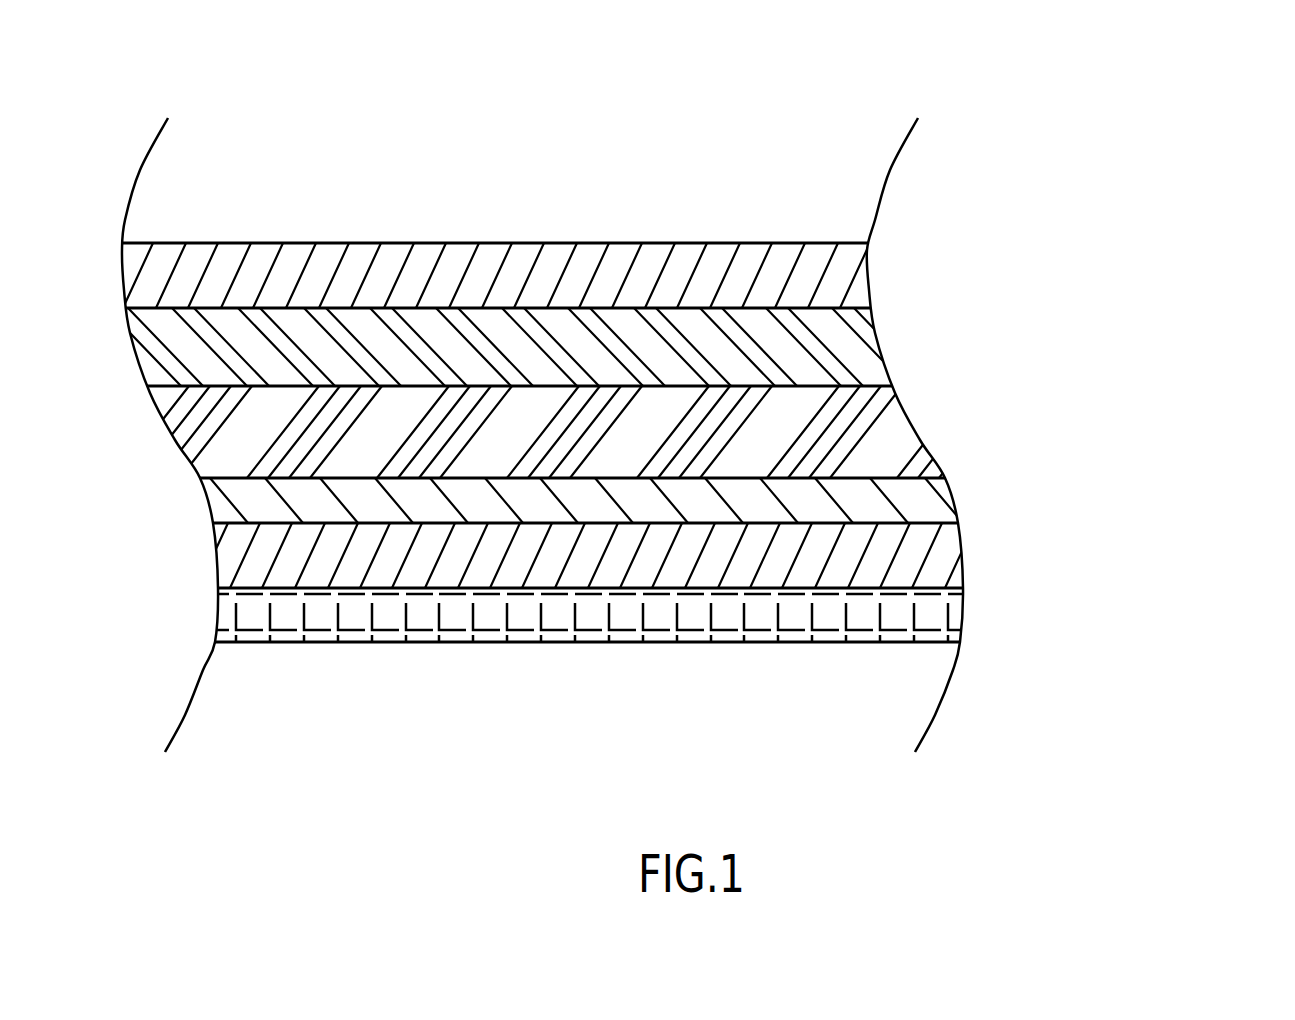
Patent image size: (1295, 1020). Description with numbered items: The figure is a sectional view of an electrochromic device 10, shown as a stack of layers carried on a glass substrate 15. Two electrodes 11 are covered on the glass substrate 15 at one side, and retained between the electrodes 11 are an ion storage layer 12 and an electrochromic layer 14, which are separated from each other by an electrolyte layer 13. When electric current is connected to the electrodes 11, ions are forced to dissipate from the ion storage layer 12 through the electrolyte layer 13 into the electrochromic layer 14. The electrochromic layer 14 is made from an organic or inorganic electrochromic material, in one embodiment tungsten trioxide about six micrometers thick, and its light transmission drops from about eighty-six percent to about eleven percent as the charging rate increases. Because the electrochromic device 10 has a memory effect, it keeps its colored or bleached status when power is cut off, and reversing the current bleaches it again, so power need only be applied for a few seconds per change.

The electrochromic device 10 is at (326, 162).
The electrodes 11 is at (731, 272).
The ion storage layer 12 is at (843, 350).
The electrolyte layer 13 is at (887, 443).
The electrochromic layer 14 is at (910, 502).
The glass substrate 15 is at (647, 620).